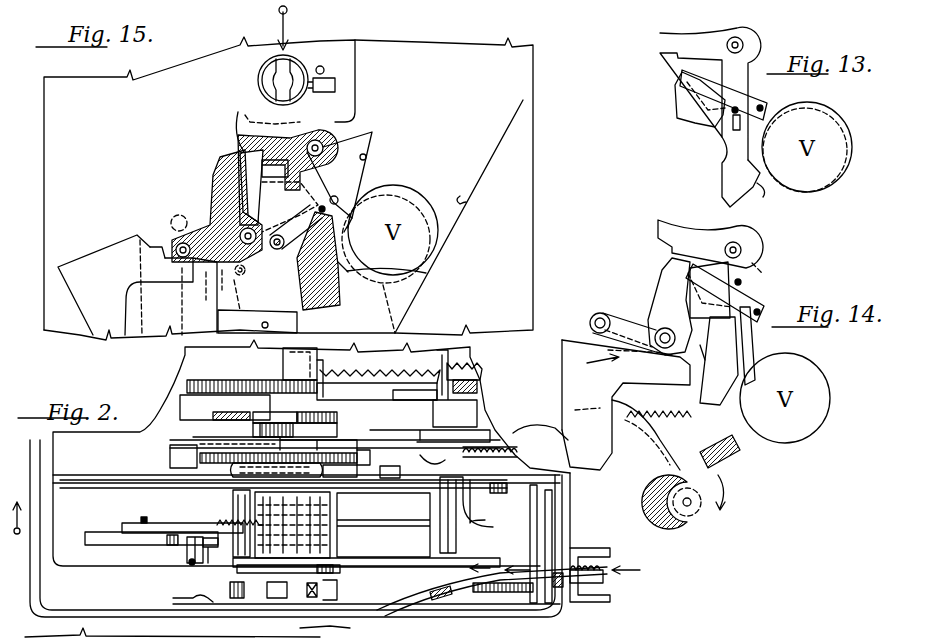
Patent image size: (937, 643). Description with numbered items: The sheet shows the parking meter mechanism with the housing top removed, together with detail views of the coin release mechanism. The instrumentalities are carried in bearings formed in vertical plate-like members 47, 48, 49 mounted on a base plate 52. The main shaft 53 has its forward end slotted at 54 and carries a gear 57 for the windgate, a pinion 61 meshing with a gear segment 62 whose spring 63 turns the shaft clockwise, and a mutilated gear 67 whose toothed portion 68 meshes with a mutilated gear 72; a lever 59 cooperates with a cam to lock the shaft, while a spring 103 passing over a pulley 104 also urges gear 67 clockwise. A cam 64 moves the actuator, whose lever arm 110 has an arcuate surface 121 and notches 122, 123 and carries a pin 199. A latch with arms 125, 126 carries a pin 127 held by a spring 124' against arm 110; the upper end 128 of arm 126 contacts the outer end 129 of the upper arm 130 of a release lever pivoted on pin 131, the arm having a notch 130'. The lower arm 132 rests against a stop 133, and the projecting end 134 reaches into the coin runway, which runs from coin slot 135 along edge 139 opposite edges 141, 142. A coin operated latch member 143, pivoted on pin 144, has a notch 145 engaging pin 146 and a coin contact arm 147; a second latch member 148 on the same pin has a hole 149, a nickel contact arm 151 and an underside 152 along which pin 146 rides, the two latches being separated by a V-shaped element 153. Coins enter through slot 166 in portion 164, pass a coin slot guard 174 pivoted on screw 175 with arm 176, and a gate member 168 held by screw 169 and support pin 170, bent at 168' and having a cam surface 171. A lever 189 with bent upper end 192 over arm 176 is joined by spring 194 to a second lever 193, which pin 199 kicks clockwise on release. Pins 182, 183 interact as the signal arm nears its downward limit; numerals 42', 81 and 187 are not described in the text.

In FIG. 2, the frame plate 42' is at (583, 510).
In FIG. 2, the support plate 47 is at (420, 556).
In FIG. 2, the plate-like member 48 is at (85, 483).
In FIG. 2, the support plate 49 is at (197, 362).
In FIG. 2, the base plate 52 is at (80, 458).
In FIG. 15, the main shaft 53 is at (268, 90).
In FIG. 2, the main shaft 53 is at (331, 540).
In FIG. 15, the slot 54 is at (278, 70).
In FIG. 2, the gear 57 is at (200, 458).
In FIG. 2, the lever 59 is at (396, 468).
In FIG. 2, the pinion 61 is at (252, 430).
In FIG. 2, the gear segment 62 is at (395, 430).
In FIG. 2, the spring 63 is at (468, 461).
In FIG. 2, the cam 64 is at (178, 413).
In FIG. 2, the mutilated gear 67 is at (345, 398).
In FIG. 2, the toothed portion 68 is at (248, 385).
In FIG. 2, the mutilated gear 72 is at (417, 395).
In FIG. 2, the base 81 is at (207, 641).
In FIG. 2, the spring 103 is at (481, 375).
In FIG. 2, the pulley 104 is at (472, 355).
In FIG. 15, the lever arm 110 is at (95, 292).
In FIG. 14, the lever arm 110 is at (602, 385).
In FIG. 2, the lever arm 110 is at (100, 545).
In FIG. 15, the arcuate surface 121 is at (108, 247).
In FIG. 14, the arcuate surface 121 is at (565, 340).
In FIG. 14, the notch 122 is at (670, 373).
In FIG. 2, the notch 122 is at (212, 548).
In FIG. 15, the notch 123 is at (162, 233).
In FIG. 14, the notch 123 is at (615, 351).
In FIG. 2, the notch 123 is at (167, 550).
In FIG. 15, the spring 124' is at (236, 290).
In FIG. 15, the arm 125 is at (181, 220).
In FIG. 14, the arm 125 is at (632, 334).
In FIG. 15, the arm 126 is at (220, 180).
In FIG. 14, the arm 126 is at (656, 294).
In FIG. 15, the pin 127 is at (178, 254).
In FIG. 14, the pin 127 is at (600, 313).
In FIG. 2, the pin 127 is at (187, 556).
In FIG. 15, the upper end 128 is at (238, 150).
In FIG. 15, the outer end 129 is at (248, 118).
In FIG. 13, the outer end 129 is at (660, 41).
In FIG. 15, the upper arm 130 is at (282, 122).
In FIG. 13, the upper arm 130 is at (710, 93).
In FIG. 14, the upper arm 130 is at (710, 238).
In FIG. 13, the notch 130' is at (652, 67).
In FIG. 14, the notch 130' is at (646, 251).
In FIG. 15, the pin 131 is at (333, 165).
In FIG. 13, the pin 131 is at (744, 45).
In FIG. 14, the pin 131 is at (736, 246).
In FIG. 13, the lower arm 132 is at (721, 152).
In FIG. 14, the lower arm 132 is at (706, 372).
In FIG. 15, the stop 133 is at (368, 147).
In FIG. 15, the laterally projecting end 134 is at (343, 276).
In FIG. 13, the laterally projecting end 134 is at (763, 195).
In FIG. 14, the laterally projecting end 134 is at (731, 417).
In FIG. 2, the coin slot 135 is at (566, 606).
In FIG. 15, the edge 139 is at (464, 201).
In FIG. 15, the edge 141 is at (376, 168).
In FIG. 15, the edge 142 is at (299, 323).
In FIG. 15, the coin operated latch member 143 is at (275, 168).
In FIG. 13, the coin operated latch member 143 is at (750, 92).
In FIG. 14, the coin operated latch member 143 is at (750, 298).
In FIG. 15, the pivot pin 144 is at (340, 196).
In FIG. 13, the pivot pin 144 is at (765, 104).
In FIG. 14, the pivot pin 144 is at (760, 310).
In FIG. 13, the notch 145 is at (699, 83).
In FIG. 14, the notch 145 is at (764, 260).
In FIG. 15, the pin 146 is at (305, 257).
In FIG. 13, the pin 146 is at (735, 127).
In FIG. 14, the pin 146 is at (733, 346).
In FIG. 15, the coin contact arm 147 is at (428, 274).
In FIG. 13, the coin contact arm 147 is at (750, 163).
In FIG. 14, the coin contact arm 147 is at (747, 362).
In FIG. 15, the second latch member 148 is at (268, 204).
In FIG. 13, the second latch member 148 is at (684, 121).
In FIG. 14, the second latch member 148 is at (708, 300).
In FIG. 15, the hole 149 is at (320, 208).
In FIG. 13, the hole 149 is at (730, 108).
In FIG. 14, the hole 149 is at (735, 285).
In FIG. 15, the coin contact arm 151 is at (344, 233).
In FIG. 13, the coin contact arm 151 is at (767, 130).
In FIG. 14, the coin contact arm 151 is at (758, 332).
In FIG. 14, the underside 152 is at (691, 353).
In FIG. 15, the V-shaped element 153 is at (252, 266).
In FIG. 2, the portion 164 is at (600, 603).
In FIG. 2, the coin slot 166 is at (607, 582).
In FIG. 2, the member 168 is at (492, 577).
In FIG. 2, the bent point 168' is at (426, 598).
In FIG. 2, the screw 169 is at (197, 596).
In FIG. 2, the support pin 170 is at (360, 601).
In FIG. 2, the cam surface 171 is at (472, 594).
In FIG. 2, the coin slot guard 174 is at (545, 527).
In FIG. 2, the pivot screw 175 is at (550, 498).
In FIG. 2, the arm 176 is at (522, 491).
In FIG. 15, the pin 182 is at (324, 93).
In FIG. 2, the pin 182 is at (258, 596).
In FIG. 15, the pin 183 is at (321, 67).
In FIG. 2, the pin 183 is at (315, 595).
In FIG. 2, the direction arrow 187 is at (610, 570).
In FIG. 14, the lever 189 is at (736, 460).
In FIG. 2, the lever 189 is at (382, 519).
In FIG. 2, the upper end 192 is at (483, 522).
In FIG. 14, the second lever 193 is at (650, 442).
In FIG. 2, the second lever 193 is at (133, 522).
In FIG. 14, the spring 194 is at (669, 421).
In FIG. 2, the spring 194 is at (222, 518).
In FIG. 14, the pin 199 is at (588, 417).
In FIG. 2, the pin 199 is at (149, 520).